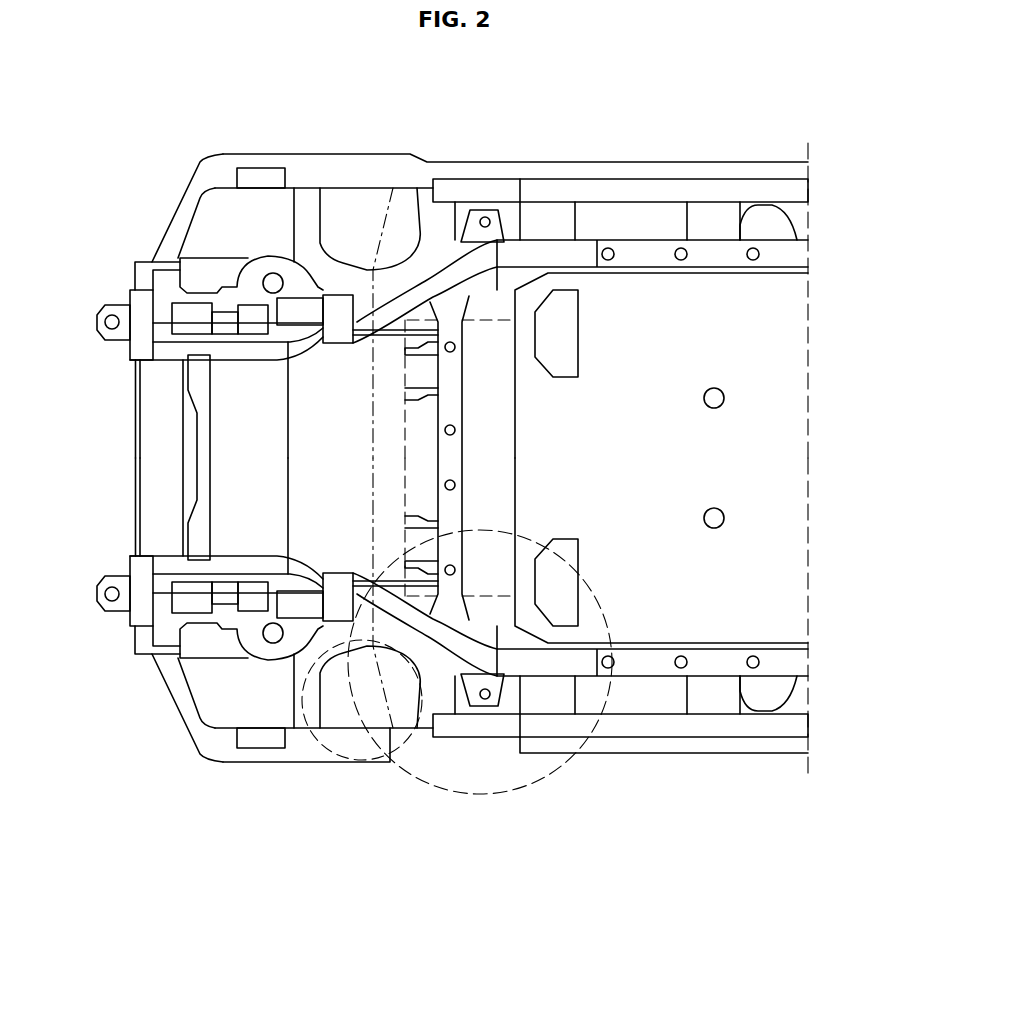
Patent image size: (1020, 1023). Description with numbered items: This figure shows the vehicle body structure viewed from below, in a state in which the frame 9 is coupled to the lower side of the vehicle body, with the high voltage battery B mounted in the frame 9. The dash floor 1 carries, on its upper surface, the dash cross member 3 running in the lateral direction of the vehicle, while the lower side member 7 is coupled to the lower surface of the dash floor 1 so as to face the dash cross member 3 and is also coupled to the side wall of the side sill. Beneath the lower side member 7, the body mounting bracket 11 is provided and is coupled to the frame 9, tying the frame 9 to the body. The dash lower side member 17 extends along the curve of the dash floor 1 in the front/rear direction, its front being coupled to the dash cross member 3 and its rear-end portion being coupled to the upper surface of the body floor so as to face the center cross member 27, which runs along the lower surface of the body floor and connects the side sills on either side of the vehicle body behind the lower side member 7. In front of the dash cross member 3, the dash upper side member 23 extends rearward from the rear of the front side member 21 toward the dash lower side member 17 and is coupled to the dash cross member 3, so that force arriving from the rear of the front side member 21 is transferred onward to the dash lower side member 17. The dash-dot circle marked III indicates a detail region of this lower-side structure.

The dash floor 1 is at (358, 226).
The dash cross member 3 is at (383, 450).
The lower side member 7 is at (430, 673).
The frame 9 is at (549, 662).
The body mounting bracket 11 is at (463, 700).
The dash lower side member 17 is at (488, 652).
The front side member 21 is at (203, 275).
The dash upper side member 23 is at (342, 605).
The center cross member 27 is at (548, 220).
The high voltage battery B is at (710, 330).
The section III is at (607, 618).